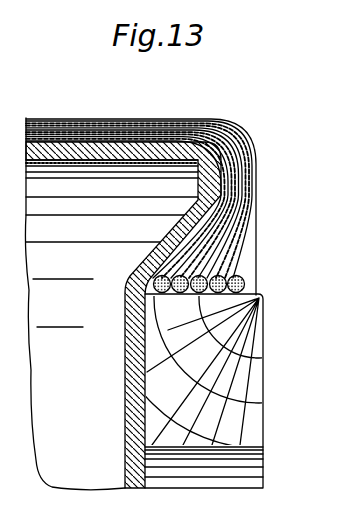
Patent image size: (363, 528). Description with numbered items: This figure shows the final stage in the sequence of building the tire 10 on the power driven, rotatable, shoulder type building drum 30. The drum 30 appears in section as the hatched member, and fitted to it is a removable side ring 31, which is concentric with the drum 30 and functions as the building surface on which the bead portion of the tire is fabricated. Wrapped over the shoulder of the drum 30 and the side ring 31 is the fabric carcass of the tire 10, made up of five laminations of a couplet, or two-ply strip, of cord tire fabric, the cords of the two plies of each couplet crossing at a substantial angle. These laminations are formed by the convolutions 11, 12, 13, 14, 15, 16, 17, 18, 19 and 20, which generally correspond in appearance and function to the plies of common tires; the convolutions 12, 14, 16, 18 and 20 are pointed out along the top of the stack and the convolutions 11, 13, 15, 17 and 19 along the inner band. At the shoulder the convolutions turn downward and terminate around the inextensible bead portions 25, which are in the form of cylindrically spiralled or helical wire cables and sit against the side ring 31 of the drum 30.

The tire 10 is at (270, 184).
The convolution 11 is at (39, 150).
The convolution 12 is at (39, 150).
The convolution 13 is at (64, 152).
The convolution 14 is at (64, 152).
The convolution 15 is at (95, 150).
The convolution 16 is at (95, 150).
The convolution 17 is at (121, 150).
The convolution 18 is at (121, 150).
The convolution 19 is at (161, 150).
The convolution 20 is at (161, 150).
The bead portion 25 is at (244, 287).
The building drum 30 is at (163, 247).
The side ring 31 is at (262, 368).